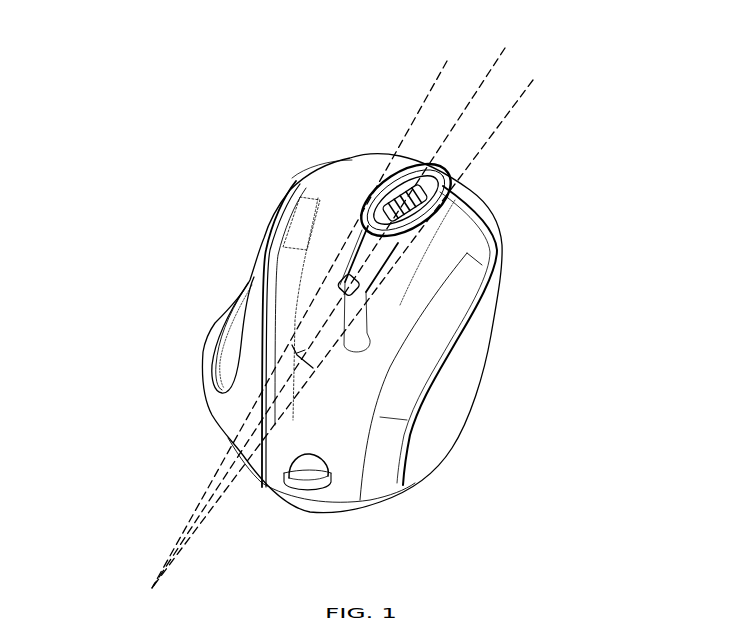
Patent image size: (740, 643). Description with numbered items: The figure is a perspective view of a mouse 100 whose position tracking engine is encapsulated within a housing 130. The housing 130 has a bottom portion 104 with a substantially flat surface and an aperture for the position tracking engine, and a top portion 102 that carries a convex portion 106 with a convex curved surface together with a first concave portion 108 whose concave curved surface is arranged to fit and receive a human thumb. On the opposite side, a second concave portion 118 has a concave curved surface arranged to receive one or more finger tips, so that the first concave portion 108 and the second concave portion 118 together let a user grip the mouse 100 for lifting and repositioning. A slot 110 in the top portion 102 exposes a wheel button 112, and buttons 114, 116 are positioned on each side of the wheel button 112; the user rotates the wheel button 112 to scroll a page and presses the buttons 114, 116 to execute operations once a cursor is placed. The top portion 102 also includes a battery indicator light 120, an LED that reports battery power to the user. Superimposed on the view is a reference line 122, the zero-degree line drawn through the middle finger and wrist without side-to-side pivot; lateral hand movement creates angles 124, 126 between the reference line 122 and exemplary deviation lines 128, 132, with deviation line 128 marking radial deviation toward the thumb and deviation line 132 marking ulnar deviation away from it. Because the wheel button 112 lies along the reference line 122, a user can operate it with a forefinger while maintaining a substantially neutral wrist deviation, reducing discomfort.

The mouse 100 is at (124, 66).
The top portion 102 is at (368, 128).
The bottom portion 104 is at (436, 492).
The convex portion 106 is at (478, 186).
The first concave portion 108 is at (223, 346).
The slot 110 is at (398, 235).
The wheel button 112 is at (405, 217).
The button 114 is at (341, 188).
The button 116 is at (457, 220).
The second concave portion 118 is at (468, 360).
The battery indicator light 120 is at (343, 287).
The reference line 122 is at (492, 68).
The angle 124 is at (292, 345).
The angle 126 is at (313, 367).
The deviation line 128 is at (434, 85).
The housing 130 is at (225, 440).
The deviation line 132 is at (518, 100).